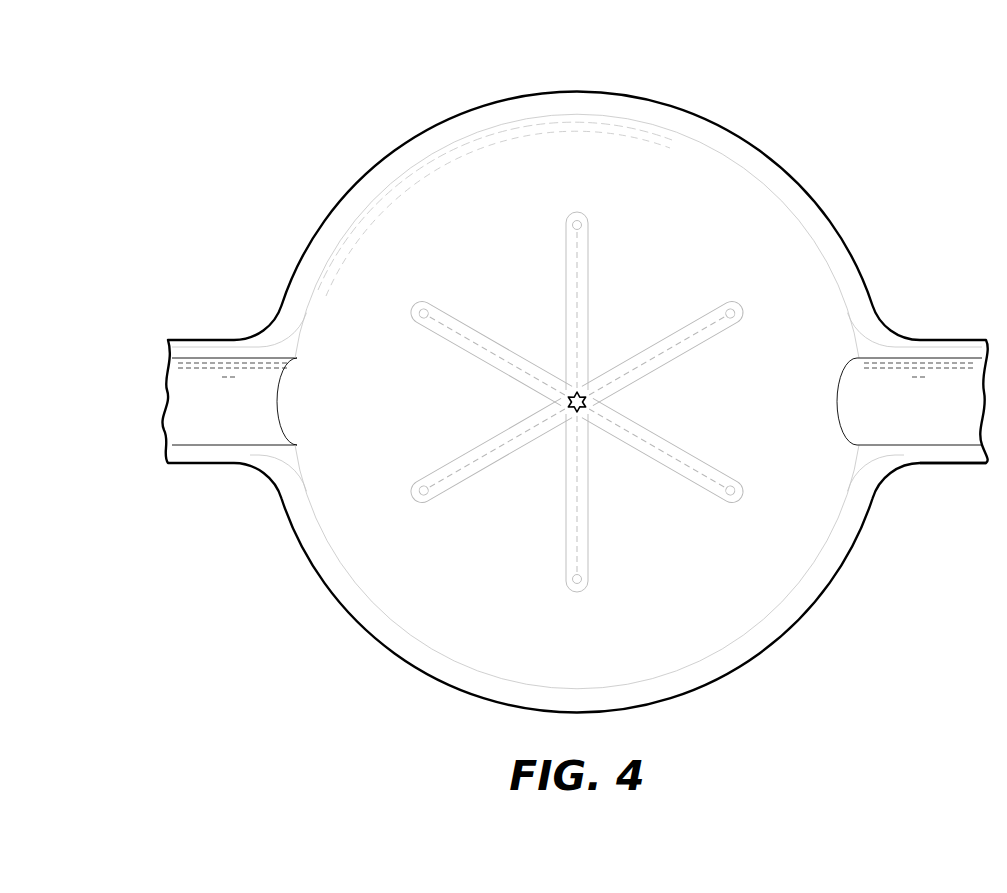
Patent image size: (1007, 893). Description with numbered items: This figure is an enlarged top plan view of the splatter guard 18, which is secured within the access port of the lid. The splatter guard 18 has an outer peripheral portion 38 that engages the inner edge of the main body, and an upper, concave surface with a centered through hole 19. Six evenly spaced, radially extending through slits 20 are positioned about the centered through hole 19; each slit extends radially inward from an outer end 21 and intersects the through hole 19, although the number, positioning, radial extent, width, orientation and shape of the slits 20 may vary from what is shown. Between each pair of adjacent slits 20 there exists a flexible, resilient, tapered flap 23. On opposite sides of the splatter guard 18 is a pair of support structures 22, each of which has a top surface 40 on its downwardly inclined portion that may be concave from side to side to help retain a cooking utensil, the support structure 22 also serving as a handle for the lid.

The splatter guard 18 is at (623, 148).
The through hole 19 is at (582, 392).
The through slits 20 is at (670, 468).
The outer end 21 is at (576, 592).
The support structure 22 is at (942, 458).
The tapered flap 23 is at (605, 458).
The outer peripheral portion 38 is at (838, 256).
The top surface 40 is at (930, 377).